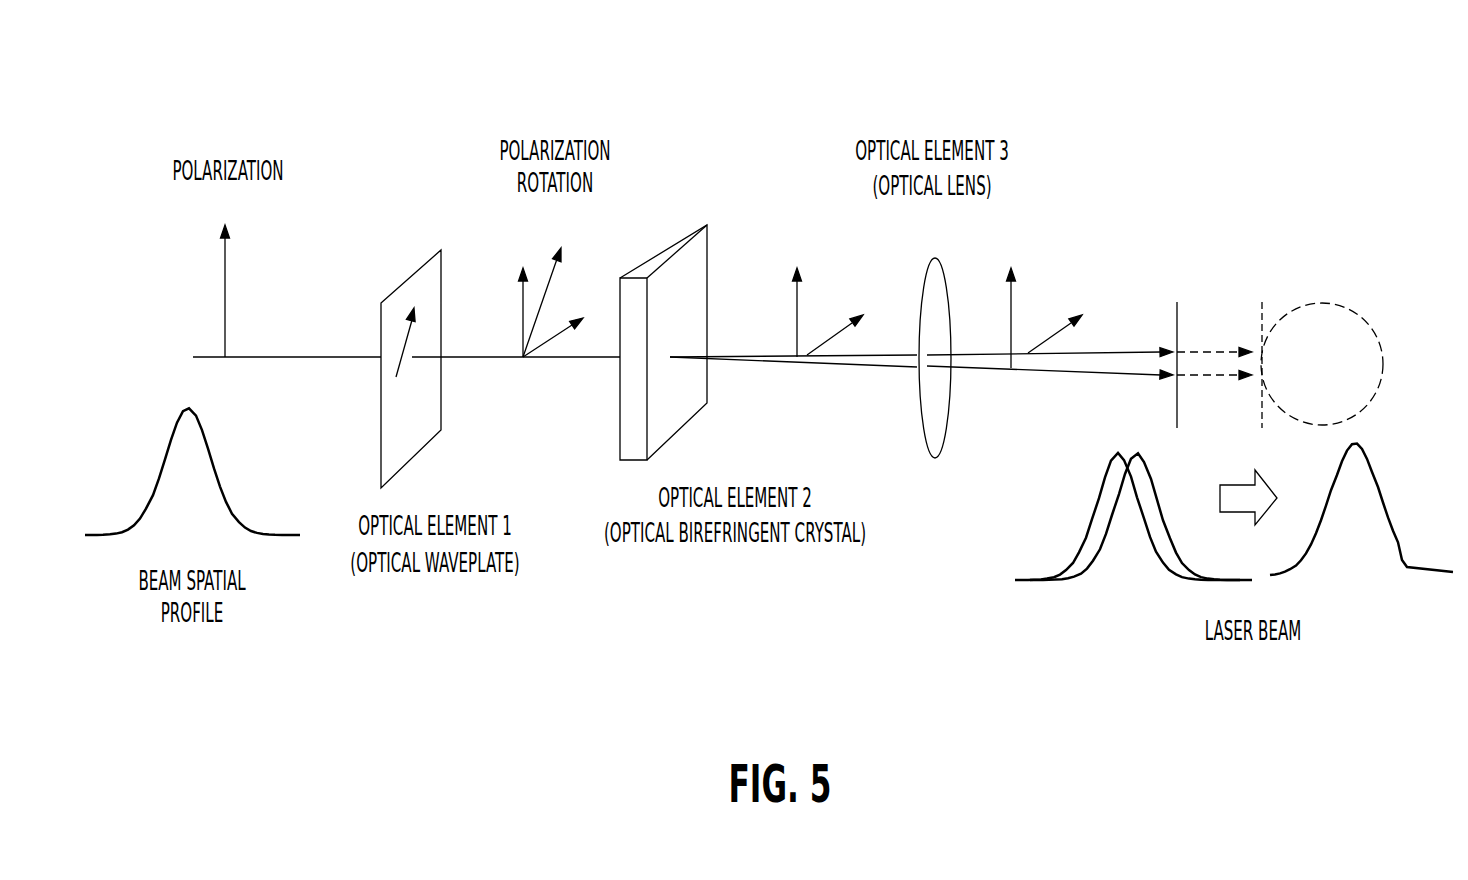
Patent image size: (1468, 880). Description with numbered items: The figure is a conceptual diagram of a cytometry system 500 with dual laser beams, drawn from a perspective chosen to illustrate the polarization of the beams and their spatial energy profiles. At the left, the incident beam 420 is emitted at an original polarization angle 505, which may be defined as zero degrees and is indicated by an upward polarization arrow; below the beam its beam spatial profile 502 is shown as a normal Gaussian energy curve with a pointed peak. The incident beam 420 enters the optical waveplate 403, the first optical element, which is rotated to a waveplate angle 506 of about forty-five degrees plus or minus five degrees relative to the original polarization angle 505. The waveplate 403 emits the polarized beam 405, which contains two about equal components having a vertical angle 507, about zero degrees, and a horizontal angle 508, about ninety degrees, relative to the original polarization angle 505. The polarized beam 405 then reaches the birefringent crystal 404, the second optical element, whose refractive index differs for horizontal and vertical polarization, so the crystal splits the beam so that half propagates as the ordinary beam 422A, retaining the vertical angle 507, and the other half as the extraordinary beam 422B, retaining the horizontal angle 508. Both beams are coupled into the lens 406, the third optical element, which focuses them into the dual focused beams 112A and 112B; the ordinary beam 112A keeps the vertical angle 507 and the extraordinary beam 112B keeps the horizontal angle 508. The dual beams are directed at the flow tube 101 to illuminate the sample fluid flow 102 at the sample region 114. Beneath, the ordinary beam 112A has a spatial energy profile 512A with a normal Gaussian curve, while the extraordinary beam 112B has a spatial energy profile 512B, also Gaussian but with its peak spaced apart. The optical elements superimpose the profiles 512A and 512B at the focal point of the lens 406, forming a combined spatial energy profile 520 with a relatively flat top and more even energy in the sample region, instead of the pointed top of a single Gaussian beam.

The cytometry system 500 is at (435, 102).
The original polarization angle 505 is at (224, 278).
The incident beam 420 is at (306, 360).
The optical waveplate 403 is at (427, 429).
The waveplate angle 506 is at (405, 338).
The polarized beam 405 is at (492, 362).
The vertical angle 507 is at (522, 305).
The horizontal angle 508 is at (547, 335).
The birefringent crystal 404 is at (660, 309).
The ordinary beam 422A is at (888, 367).
The extraordinary beam 422B is at (897, 350).
The lens 406 is at (937, 437).
The ordinary beam 112A is at (1105, 375).
The extraordinary beam 112B is at (1132, 348).
The flow tube 101 is at (1180, 407).
The sample fluid flow 102 is at (1262, 357).
The sample region 114 is at (1343, 310).
The beam spatial profile 502 is at (133, 520).
The spatial energy profile 512A is at (1075, 553).
The spatial energy profile 512B is at (1088, 567).
The combined spatial energy profile 520 is at (1302, 563).